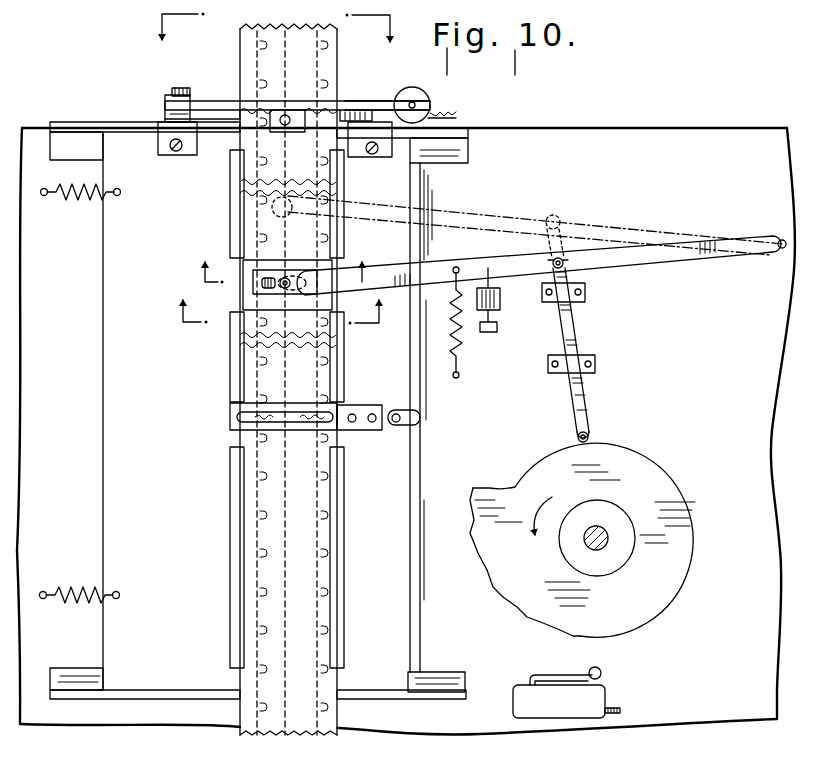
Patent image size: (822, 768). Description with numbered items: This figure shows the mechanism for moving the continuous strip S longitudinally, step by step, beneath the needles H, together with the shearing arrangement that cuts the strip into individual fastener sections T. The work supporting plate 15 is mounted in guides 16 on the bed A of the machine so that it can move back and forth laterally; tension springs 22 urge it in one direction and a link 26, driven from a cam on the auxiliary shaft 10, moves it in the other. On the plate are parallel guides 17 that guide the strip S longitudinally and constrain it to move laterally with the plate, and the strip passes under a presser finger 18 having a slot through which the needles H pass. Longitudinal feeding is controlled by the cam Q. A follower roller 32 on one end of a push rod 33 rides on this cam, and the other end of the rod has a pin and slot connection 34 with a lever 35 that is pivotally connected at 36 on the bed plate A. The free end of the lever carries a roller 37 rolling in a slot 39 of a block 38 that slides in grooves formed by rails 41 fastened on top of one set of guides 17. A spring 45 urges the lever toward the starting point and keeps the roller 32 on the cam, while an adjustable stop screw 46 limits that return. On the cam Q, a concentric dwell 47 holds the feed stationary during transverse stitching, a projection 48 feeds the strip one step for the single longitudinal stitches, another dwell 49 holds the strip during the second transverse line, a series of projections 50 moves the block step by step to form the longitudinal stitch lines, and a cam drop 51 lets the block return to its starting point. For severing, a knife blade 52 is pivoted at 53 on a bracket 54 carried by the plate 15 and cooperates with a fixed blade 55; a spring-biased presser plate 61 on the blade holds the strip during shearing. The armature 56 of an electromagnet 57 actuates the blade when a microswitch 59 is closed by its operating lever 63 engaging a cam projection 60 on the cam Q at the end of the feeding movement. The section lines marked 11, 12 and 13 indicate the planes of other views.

The auxiliary shaft 10 is at (588, 527).
The section line 11- 11 is at (275, 40).
The section line 12- 12 is at (288, 306).
The section line 13- 13 is at (285, 261).
The work supporting plate 15 is at (148, 682).
The guides 16 is at (462, 132).
The parallel guides 17 is at (341, 576).
The presser finger 18 is at (231, 418).
The tension springs 22 is at (86, 199).
The link 26 is at (420, 418).
The follower roller 32 is at (578, 437).
The push rod 33 is at (581, 330).
The pin and slot connection 34 is at (562, 258).
The lever 35 is at (665, 262).
The pivot 36 is at (782, 240).
The roller 37 is at (268, 320).
The block 38 is at (262, 284).
The slot 39 is at (266, 292).
The rails 41 is at (232, 206).
The spring 45 is at (455, 330).
The adjustable stop screw 46 is at (497, 285).
The concentric dwell 47 is at (620, 456).
The cam projection 48 is at (690, 511).
The dwell 49 is at (652, 624).
The cam projections 50 is at (487, 579).
The cam drop 51 is at (500, 486).
The knife blade 52 is at (348, 104).
The pivot 53 is at (184, 92).
The bracket 54 is at (160, 128).
The fixed blade 55 is at (230, 106).
The armature 56 is at (413, 100).
The electromagnet 57 is at (431, 110).
The microswitch 59 is at (583, 719).
The cam projection 60 is at (472, 490).
The spring-biased presser plate 61 is at (297, 133).
The operating lever 63 is at (603, 674).
The bed A is at (724, 152).
The needles H is at (312, 420).
The cam Q is at (676, 586).
The strip S is at (278, 734).
The fastener section T is at (243, 52).